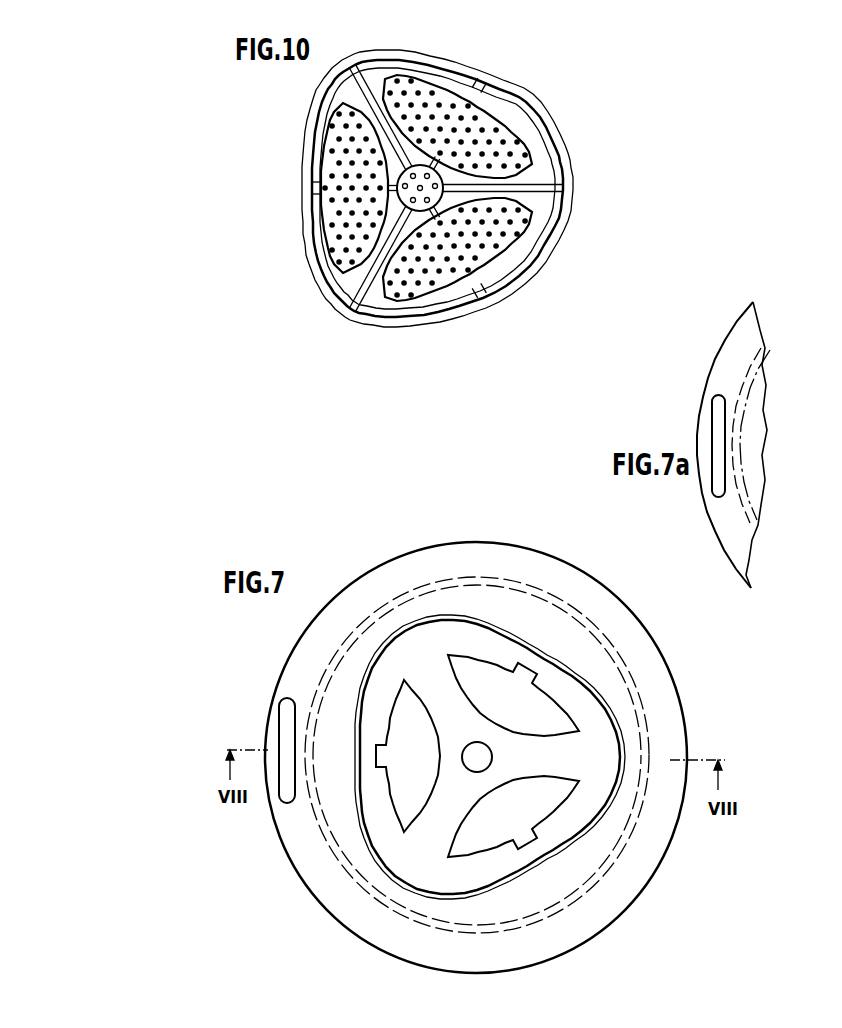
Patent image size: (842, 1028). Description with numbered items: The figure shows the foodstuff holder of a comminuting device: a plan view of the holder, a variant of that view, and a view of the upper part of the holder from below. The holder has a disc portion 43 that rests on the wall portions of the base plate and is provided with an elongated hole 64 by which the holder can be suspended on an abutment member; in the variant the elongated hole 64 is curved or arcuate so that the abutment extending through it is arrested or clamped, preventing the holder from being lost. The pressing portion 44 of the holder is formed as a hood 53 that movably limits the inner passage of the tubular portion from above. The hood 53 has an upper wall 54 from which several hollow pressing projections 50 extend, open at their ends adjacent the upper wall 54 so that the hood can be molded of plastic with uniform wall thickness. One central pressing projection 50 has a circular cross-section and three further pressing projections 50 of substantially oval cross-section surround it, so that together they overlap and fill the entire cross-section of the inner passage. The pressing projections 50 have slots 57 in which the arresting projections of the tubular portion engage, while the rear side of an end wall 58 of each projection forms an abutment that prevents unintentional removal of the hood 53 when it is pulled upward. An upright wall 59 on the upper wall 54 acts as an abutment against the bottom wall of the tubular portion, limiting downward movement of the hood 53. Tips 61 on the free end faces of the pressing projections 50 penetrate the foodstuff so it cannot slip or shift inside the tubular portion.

In FIG. 7, the disc portion 43 is at (476, 735).
In FIG. 7A, the disc portion 43 is at (732, 444).
In FIG. 10, the pressing portion 44 is at (417, 188).
In FIG. 10, the pressing projections 50 is at (406, 194).
In FIG. 10, the hood 53 is at (408, 188).
In FIG. 10, the upper wall 54 is at (542, 173).
In FIG. 7, the slots 57 is at (343, 738).
In FIG. 10, the end wall 58 is at (518, 79).
In FIG. 10, the upright wall 59 is at (454, 186).
In FIG. 10, the tips 61 is at (450, 188).
In FIG. 7, the elongated hole 64 is at (278, 788).
In FIG. 7A, the elongated hole 64 is at (712, 412).